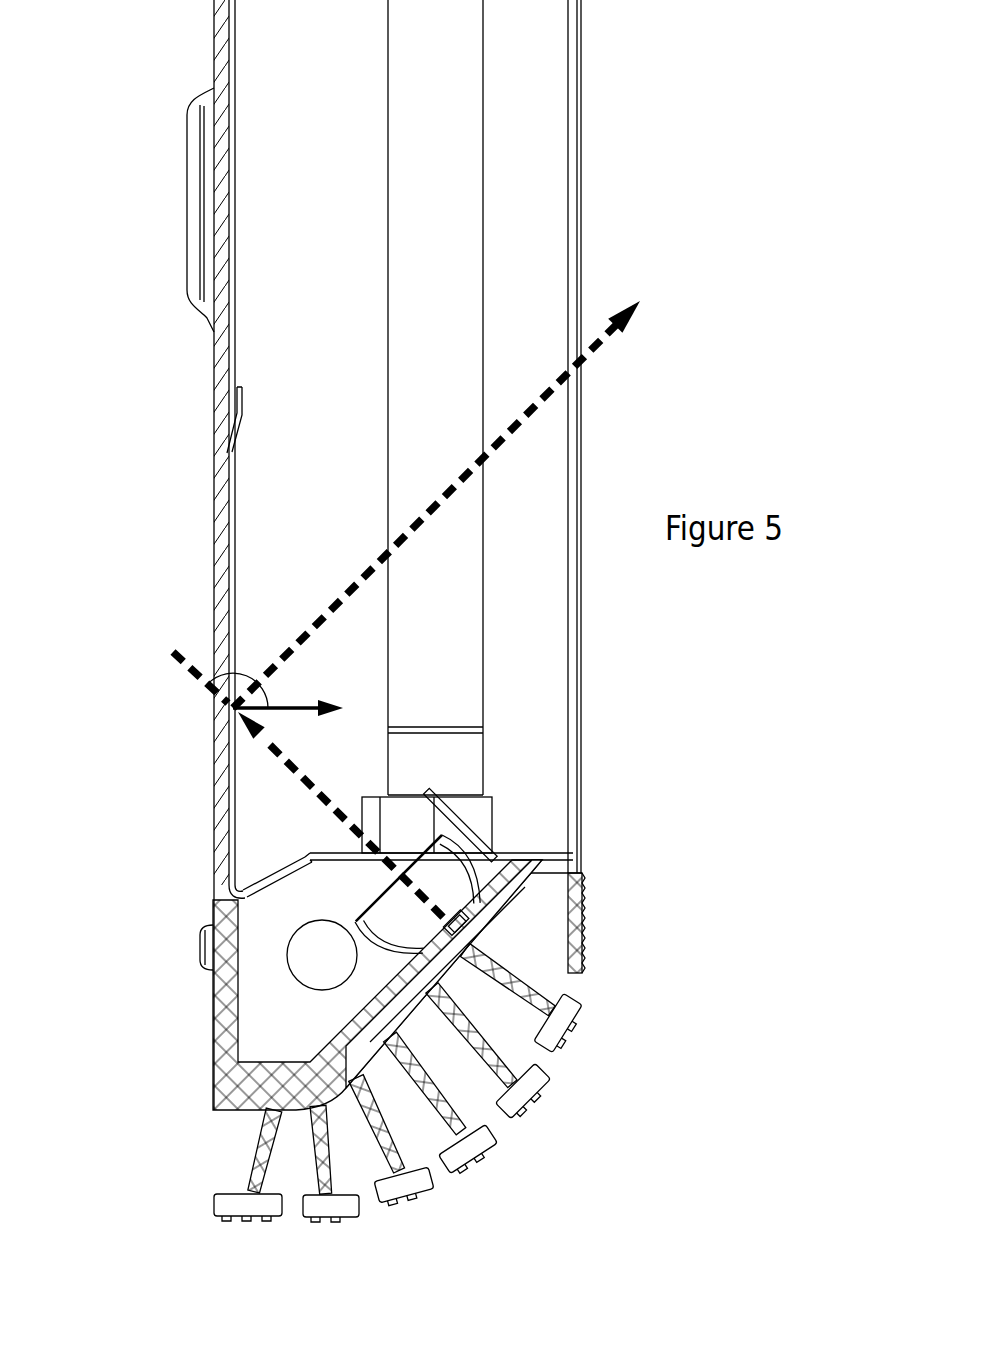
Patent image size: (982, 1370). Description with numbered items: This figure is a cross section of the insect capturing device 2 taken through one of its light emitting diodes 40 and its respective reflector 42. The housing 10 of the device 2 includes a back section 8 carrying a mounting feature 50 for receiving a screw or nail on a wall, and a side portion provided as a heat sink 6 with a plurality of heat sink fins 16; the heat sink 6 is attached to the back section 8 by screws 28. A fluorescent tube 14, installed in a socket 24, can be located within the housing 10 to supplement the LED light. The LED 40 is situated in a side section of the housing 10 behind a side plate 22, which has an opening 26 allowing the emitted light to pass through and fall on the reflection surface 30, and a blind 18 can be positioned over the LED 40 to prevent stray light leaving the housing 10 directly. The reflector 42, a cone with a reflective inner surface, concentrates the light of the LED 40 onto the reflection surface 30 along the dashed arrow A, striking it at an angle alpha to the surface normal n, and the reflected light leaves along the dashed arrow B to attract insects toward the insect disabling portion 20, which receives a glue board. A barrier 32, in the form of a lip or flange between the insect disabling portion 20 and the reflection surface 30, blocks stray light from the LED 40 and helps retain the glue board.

The insect capturing device 2 is at (650, 103).
The heat sink 6 is at (385, 1058).
The back section 8 is at (212, 502).
The housing 10 is at (515, 252).
The fluorescent tube 14 is at (430, 128).
The heat sink fins 16 is at (467, 1140).
The blind 18 is at (448, 812).
The insect disabling portion 20 is at (230, 150).
The side plate 22 is at (543, 855).
The socket 24 is at (482, 815).
The opening 26 is at (297, 865).
The screws 28 is at (195, 950).
The reflection surface 30 is at (232, 612).
The barrier 32 is at (243, 405).
The light emitting diode 40 is at (455, 933).
The reflector 42 is at (452, 880).
The mounting feature 50 is at (187, 230).